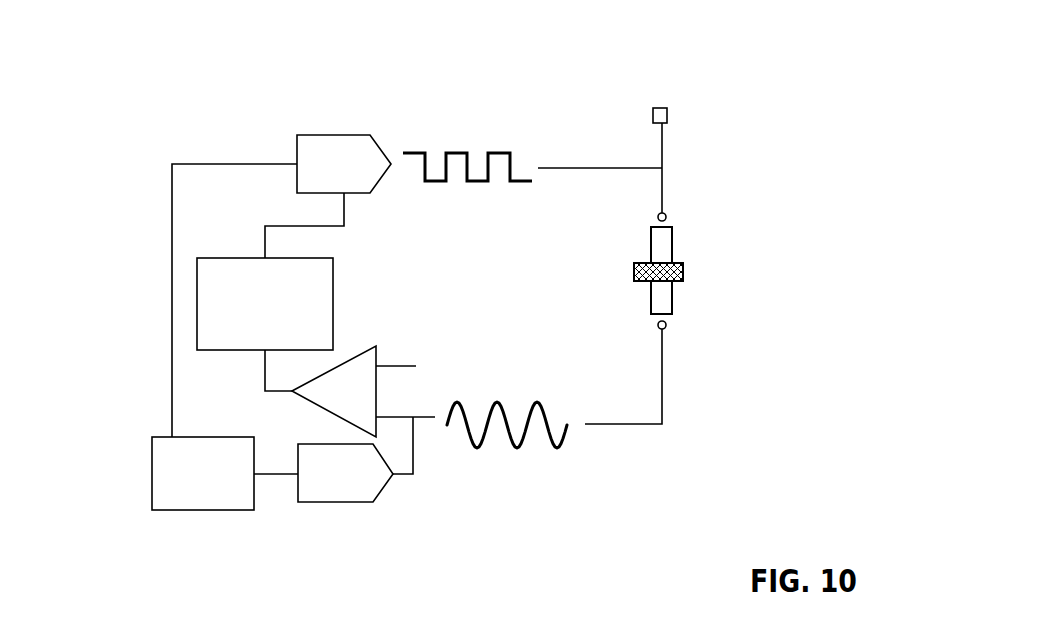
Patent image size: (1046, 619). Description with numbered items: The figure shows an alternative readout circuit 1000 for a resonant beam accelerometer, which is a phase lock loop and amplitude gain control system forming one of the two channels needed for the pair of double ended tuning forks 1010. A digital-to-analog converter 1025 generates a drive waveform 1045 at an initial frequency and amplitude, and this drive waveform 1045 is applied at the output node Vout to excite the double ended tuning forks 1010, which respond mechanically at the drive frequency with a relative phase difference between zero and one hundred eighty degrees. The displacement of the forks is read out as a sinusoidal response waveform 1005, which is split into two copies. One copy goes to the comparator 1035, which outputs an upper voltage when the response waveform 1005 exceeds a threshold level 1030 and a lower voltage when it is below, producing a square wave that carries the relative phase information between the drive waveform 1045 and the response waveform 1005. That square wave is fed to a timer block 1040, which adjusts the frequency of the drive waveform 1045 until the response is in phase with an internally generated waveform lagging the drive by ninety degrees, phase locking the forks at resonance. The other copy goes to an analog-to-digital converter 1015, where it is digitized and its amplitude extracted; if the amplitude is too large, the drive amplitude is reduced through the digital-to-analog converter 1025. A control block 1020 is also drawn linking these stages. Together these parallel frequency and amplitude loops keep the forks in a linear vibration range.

The readout circuit 1000 is at (454, 29).
The response waveform 1005 is at (565, 440).
The double ended tuning forks 1010 is at (682, 271).
The analog-to-digital converter 1015 is at (383, 490).
The successive approximation register / control logic 1020 is at (151, 475).
The digital-to-analog converter 1025 is at (296, 143).
The threshold level 1030 is at (403, 365).
The comparator 1035 is at (379, 355).
The timer block 1040 is at (196, 325).
The drive waveform 1045 is at (503, 150).
The output voltage node Vout is at (669, 116).